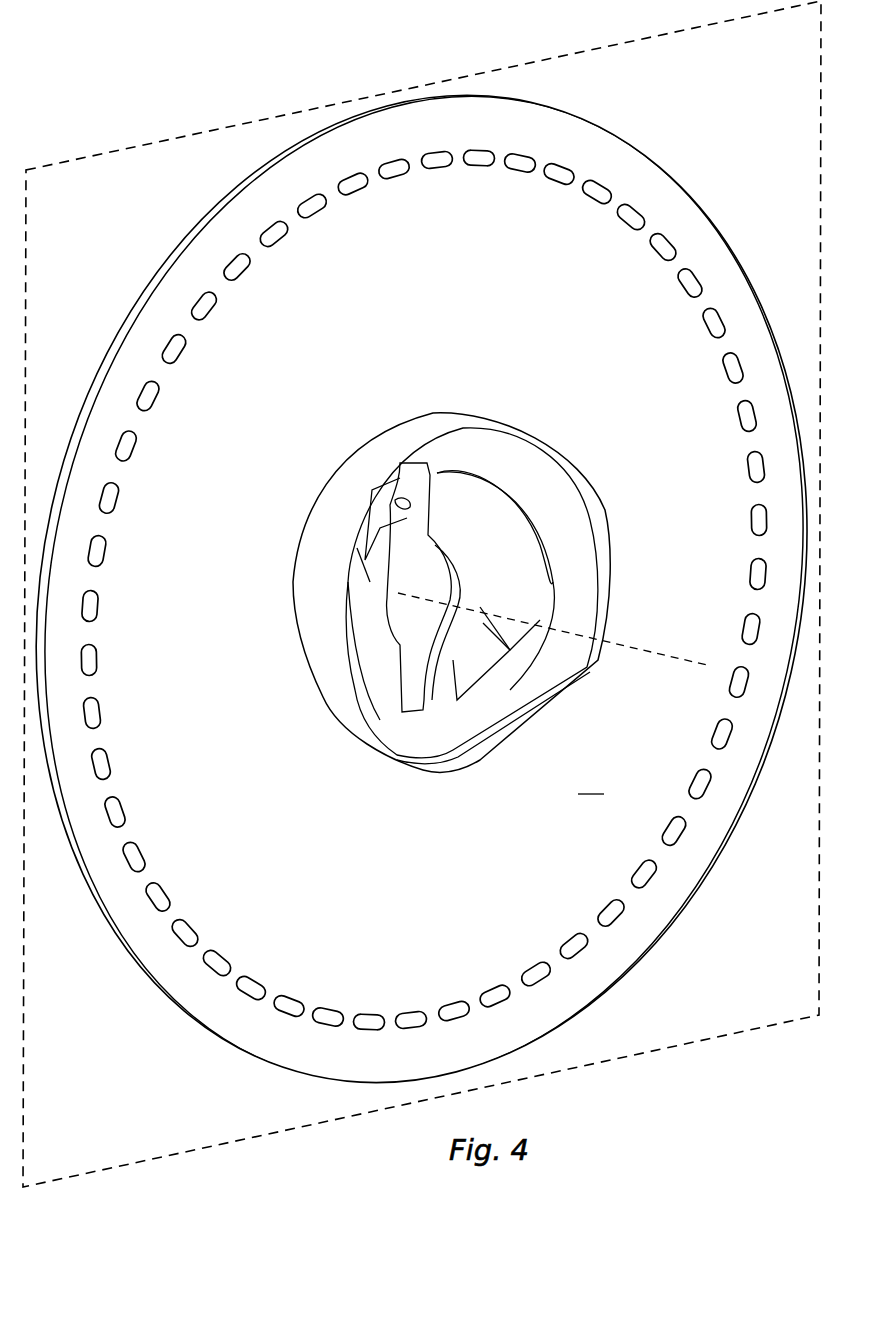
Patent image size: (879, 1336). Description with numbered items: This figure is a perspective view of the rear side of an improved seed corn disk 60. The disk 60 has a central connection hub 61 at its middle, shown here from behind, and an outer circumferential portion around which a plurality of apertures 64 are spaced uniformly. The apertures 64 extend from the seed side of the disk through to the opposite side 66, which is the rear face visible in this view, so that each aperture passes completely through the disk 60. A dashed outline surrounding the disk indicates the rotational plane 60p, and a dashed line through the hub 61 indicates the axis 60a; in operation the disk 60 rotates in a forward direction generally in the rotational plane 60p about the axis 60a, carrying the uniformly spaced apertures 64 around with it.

The seed corn disk 60 is at (633, 933).
The rotational plane 60p is at (697, 1040).
The axis 60a is at (655, 652).
The central connection hub 61 is at (477, 518).
The apertures 64 is at (662, 250).
The opposite side 66 is at (451, 604).